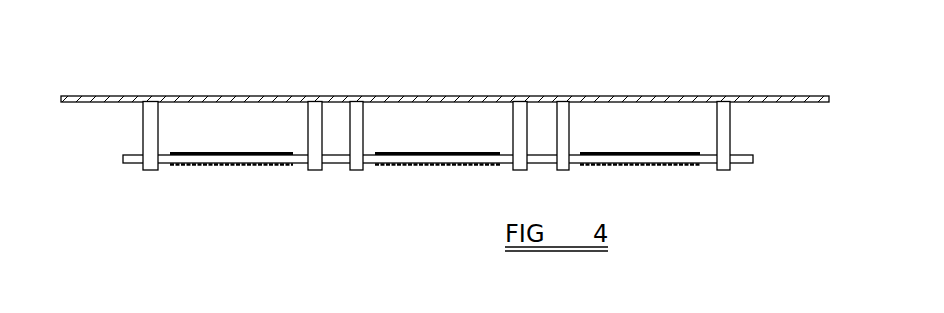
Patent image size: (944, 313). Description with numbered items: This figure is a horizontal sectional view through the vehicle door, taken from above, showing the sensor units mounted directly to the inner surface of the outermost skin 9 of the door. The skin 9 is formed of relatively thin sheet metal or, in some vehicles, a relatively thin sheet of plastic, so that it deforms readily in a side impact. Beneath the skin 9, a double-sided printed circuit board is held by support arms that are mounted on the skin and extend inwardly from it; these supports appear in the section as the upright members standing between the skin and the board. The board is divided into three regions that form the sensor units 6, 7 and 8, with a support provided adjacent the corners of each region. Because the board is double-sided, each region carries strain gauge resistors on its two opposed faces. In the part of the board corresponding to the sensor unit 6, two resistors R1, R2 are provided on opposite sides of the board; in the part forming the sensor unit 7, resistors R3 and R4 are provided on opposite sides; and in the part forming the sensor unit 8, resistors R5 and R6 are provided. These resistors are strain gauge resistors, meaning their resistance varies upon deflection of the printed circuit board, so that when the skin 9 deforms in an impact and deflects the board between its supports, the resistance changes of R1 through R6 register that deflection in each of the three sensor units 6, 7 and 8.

The sensor unit 6 is at (683, 177).
The sensor unit 7 is at (413, 128).
The sensor unit 8 is at (273, 128).
The outermost skin 9 is at (780, 96).
The resistor R1 is at (640, 188).
The resistor R2 is at (640, 131).
The resistor R3 is at (437, 188).
The resistor R4 is at (437, 131).
The resistor R5 is at (231, 188).
The resistor R6 is at (231, 131).